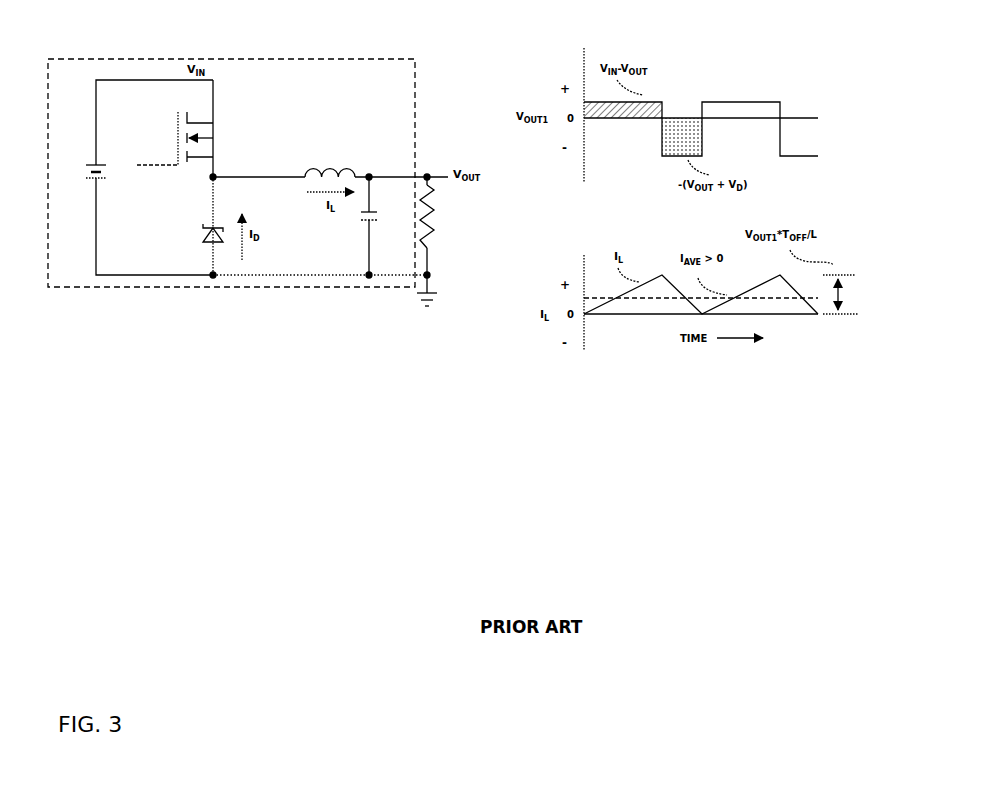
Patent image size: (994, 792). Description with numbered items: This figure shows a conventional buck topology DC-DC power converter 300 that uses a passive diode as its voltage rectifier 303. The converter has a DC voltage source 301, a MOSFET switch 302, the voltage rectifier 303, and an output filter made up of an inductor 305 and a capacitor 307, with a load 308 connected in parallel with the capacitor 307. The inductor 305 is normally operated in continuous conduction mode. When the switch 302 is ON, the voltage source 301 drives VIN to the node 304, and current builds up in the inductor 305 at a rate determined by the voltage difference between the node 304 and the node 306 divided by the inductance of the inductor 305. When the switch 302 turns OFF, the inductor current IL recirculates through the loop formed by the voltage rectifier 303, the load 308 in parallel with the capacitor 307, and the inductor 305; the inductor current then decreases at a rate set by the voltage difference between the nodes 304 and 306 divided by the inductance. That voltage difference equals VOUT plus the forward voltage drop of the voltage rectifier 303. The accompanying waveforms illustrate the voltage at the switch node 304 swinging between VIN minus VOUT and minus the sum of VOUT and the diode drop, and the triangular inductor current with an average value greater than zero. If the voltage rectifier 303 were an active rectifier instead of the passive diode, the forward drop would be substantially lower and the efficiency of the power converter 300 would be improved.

The DC-DC power converter 300 is at (265, 47).
The DC voltage source 301 is at (80, 177).
The MOSFET switch 302 is at (173, 128).
The voltage rectifier 303 is at (184, 227).
The node 304 is at (220, 172).
The inductor 305 is at (330, 160).
The node 306 is at (402, 168).
The capacitor 307 is at (357, 226).
The load 308 is at (447, 241).